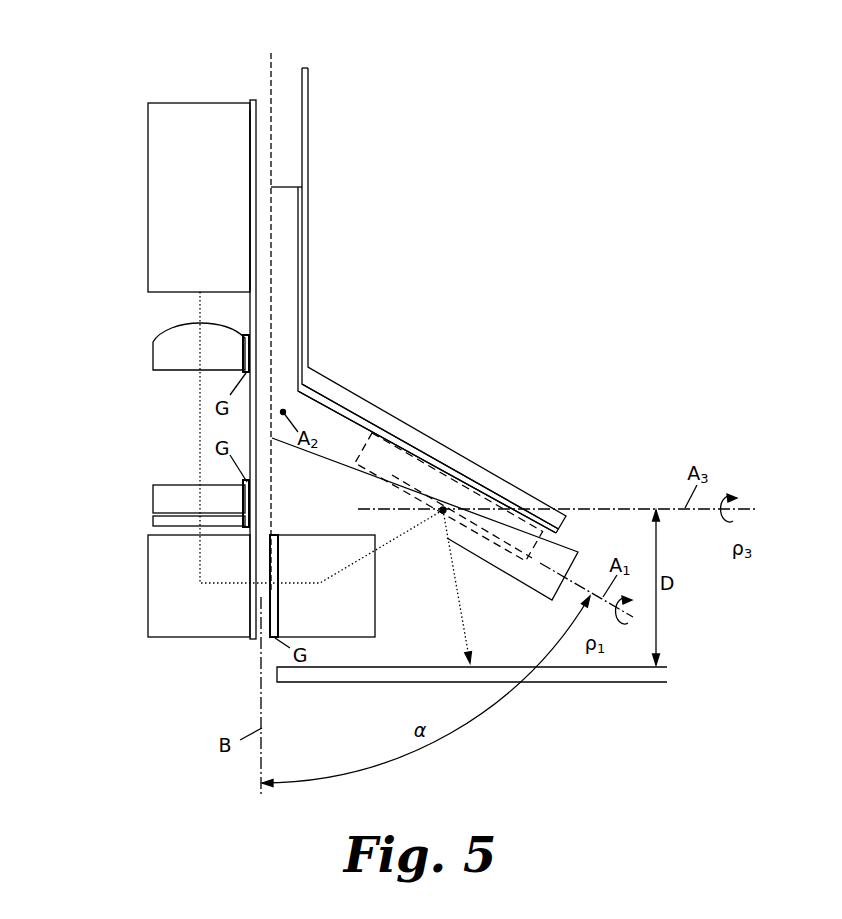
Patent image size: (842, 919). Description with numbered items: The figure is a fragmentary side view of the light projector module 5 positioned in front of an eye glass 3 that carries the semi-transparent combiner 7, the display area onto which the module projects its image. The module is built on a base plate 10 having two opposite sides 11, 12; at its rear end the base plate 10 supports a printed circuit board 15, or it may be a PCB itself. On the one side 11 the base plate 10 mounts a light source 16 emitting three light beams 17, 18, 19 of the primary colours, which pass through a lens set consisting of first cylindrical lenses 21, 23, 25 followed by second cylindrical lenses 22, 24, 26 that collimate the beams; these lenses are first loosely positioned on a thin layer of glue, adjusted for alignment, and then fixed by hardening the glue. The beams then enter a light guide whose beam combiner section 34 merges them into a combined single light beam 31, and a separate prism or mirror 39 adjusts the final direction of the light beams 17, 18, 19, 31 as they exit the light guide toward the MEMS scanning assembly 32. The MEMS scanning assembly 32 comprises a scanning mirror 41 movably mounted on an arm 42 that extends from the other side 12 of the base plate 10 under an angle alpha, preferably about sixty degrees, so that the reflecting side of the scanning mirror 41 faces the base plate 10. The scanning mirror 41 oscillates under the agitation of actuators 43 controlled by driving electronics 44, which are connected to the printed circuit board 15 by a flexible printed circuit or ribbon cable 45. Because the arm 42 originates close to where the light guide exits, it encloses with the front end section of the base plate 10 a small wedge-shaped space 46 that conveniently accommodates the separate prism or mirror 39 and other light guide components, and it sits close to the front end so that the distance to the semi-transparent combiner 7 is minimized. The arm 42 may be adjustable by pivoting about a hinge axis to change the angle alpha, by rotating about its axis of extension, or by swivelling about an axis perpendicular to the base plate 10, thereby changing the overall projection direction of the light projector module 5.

The eye glass 3 is at (472, 698).
The light projector module 5 is at (572, 147).
The semi-transparent combiner 7 is at (602, 675).
The base plate 10 is at (257, 105).
The side 11 is at (248, 233).
The side 12 is at (272, 233).
The printed circuit board 15 is at (287, 70).
The light source 16 is at (168, 152).
The light beam 17 is at (245, 436).
The light beam 18 is at (245, 436).
The light beam 19 is at (200, 312).
The first cylindrical lens 21 is at (128, 353).
The second cylindrical lens 22 is at (162, 498).
The first cylindrical lens 23 is at (128, 353).
The second cylindrical lens 24 is at (144, 541).
The first cylindrical lens 25 is at (162, 360).
The second cylindrical lens 26 is at (160, 522).
The combined single light beam 31 is at (461, 606).
The MEMS scanning assembly 32 is at (602, 403).
The beam combiner section 34 is at (154, 611).
The separate prism or mirror 39 is at (365, 620).
The scanning mirror 41 is at (427, 495).
The arm 42 is at (333, 438).
The actuators 43 is at (377, 467).
The driving electronics 44 is at (487, 493).
The ribbon cable 45 is at (307, 68).
The wedge-shaped space 46 is at (303, 514).